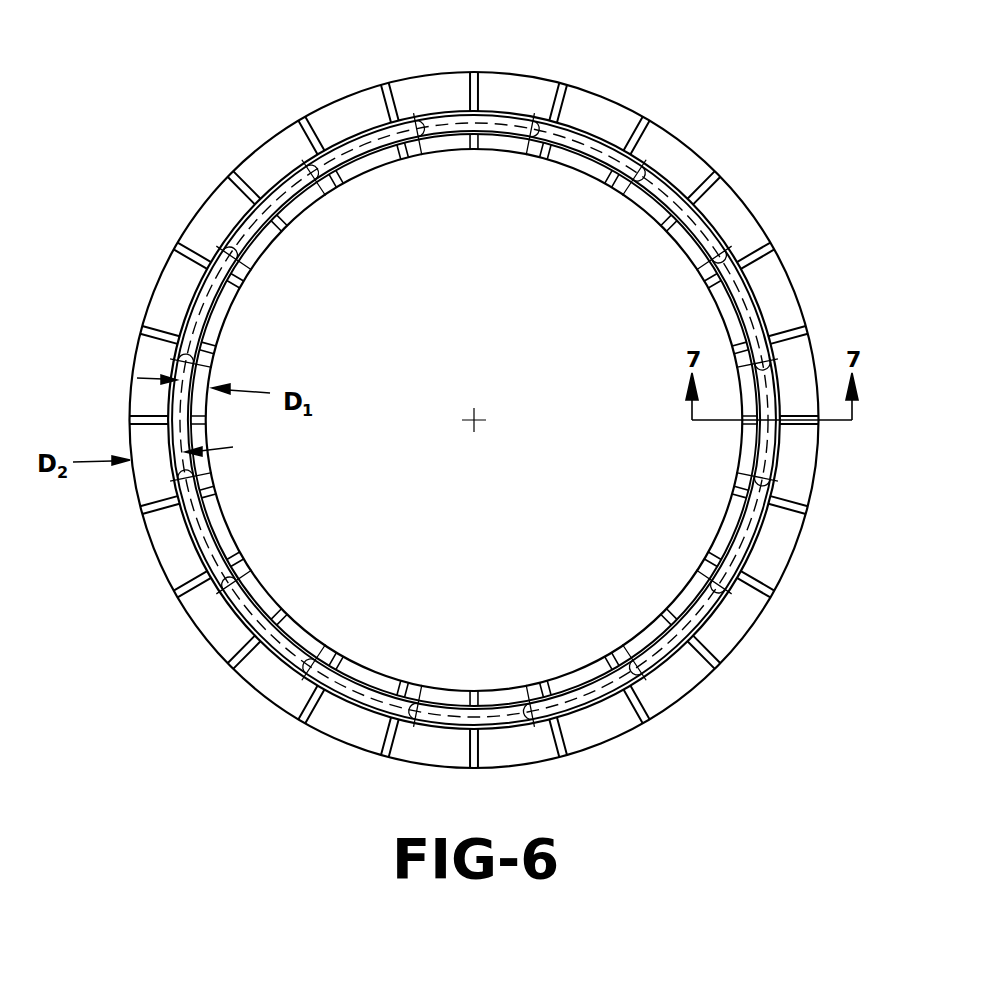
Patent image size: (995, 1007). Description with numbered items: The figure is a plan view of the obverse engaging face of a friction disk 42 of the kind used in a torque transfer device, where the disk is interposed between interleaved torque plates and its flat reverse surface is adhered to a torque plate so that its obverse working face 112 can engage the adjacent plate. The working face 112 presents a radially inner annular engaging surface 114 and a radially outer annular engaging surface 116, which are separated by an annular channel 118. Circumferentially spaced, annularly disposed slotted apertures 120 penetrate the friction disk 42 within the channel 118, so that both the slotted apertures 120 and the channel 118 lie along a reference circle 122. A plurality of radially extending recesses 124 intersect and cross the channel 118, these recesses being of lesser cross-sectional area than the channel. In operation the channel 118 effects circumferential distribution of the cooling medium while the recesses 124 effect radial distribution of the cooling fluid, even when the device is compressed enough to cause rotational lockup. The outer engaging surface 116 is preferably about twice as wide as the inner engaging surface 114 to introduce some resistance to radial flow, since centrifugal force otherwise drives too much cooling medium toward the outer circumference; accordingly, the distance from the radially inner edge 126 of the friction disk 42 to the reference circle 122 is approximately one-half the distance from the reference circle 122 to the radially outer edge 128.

The friction disk 42 is at (692, 117).
The obverse working face 112 is at (520, 74).
The radially inner annular engaging surface 114 is at (223, 303).
The radially outer annular engaging surface 116 is at (170, 310).
The annular channel 118 is at (349, 715).
The slotted apertures 120 is at (447, 710).
The reference circle 122 is at (708, 607).
The radially extending recesses 124 is at (640, 710).
The radially inner edge 126 is at (228, 545).
The radially outer edge 128 is at (788, 268).